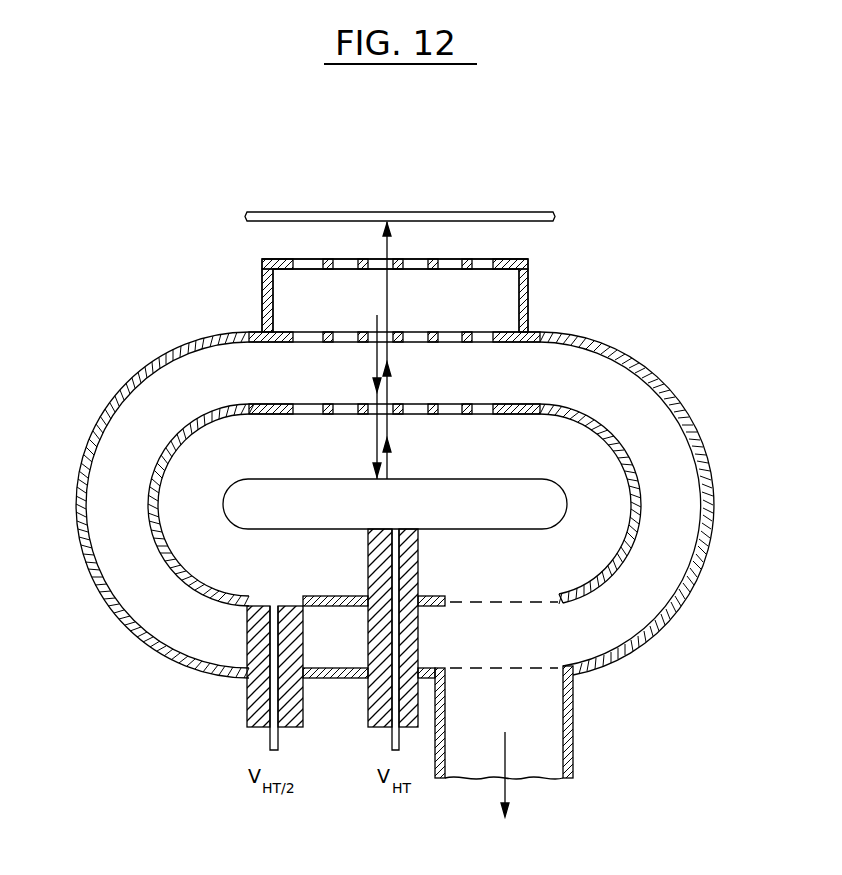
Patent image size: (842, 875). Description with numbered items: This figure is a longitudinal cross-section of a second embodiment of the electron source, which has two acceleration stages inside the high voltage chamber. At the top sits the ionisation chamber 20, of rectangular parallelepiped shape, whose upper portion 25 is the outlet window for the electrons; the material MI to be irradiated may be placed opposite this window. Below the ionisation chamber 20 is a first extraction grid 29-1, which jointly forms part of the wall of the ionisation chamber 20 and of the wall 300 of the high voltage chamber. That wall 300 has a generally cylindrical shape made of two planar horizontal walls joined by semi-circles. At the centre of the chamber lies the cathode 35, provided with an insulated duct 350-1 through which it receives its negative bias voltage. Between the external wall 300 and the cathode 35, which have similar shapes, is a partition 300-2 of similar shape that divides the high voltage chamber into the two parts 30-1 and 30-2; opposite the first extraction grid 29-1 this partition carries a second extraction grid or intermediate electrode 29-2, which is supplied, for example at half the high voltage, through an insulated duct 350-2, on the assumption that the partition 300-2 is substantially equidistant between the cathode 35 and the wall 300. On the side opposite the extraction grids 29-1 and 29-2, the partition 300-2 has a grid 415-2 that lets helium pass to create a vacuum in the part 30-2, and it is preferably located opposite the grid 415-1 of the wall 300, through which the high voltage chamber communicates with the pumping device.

The material to be irradiated MI is at (553, 212).
The upper portion of the ionisation chamber 25 is at (296, 257).
The ionisation chamber 20 is at (483, 296).
The first extraction grid 29-1 is at (474, 331).
The second extraction grid or intermediate electrode 29-2 is at (466, 399).
The first part of the high voltage chamber 30-1 is at (303, 400).
The second part of the high voltage chamber 30-2 is at (191, 476).
The high voltage chamber wall 300 is at (690, 425).
The partition 300-2 is at (152, 543).
The cathode 35 is at (553, 506).
The insulated duct 350-1 is at (375, 700).
The insulated duct 350-2 is at (250, 697).
The grid of the wall 415-1 is at (514, 676).
The grid 415-2 is at (524, 609).